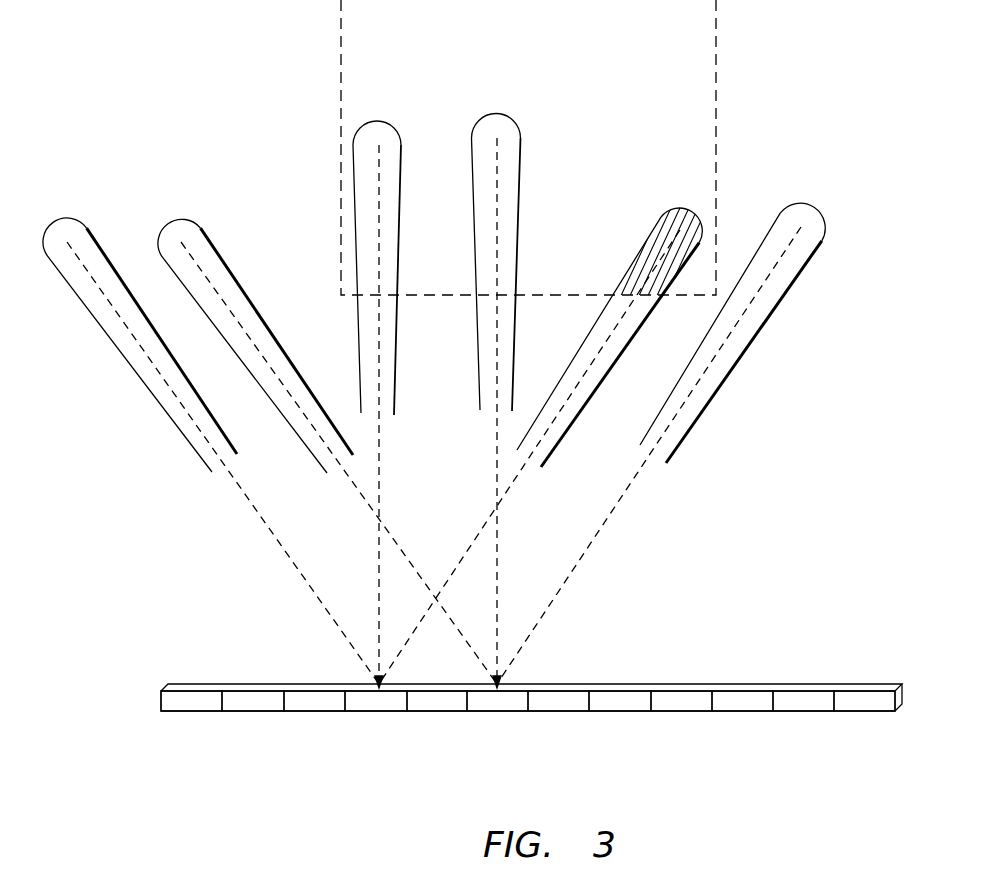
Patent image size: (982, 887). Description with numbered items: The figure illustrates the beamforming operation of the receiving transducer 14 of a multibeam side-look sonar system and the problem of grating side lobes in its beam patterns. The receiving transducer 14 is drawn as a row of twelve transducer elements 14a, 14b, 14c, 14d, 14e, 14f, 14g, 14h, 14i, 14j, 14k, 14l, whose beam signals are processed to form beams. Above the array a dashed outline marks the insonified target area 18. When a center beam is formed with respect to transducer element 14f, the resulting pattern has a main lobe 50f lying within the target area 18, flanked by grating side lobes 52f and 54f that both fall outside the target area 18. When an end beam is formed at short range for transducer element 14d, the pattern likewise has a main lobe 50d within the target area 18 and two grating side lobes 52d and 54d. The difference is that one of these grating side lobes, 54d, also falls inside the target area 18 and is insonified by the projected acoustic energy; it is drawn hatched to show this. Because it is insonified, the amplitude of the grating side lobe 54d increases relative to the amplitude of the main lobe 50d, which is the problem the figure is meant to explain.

The receiving transducer 14 is at (161, 701).
The transducer element 14a is at (187, 713).
The transducer element 14b is at (255, 713).
The transducer element 14c is at (315, 713).
The transducer element 14d is at (363, 713).
The transducer element 14e is at (442, 713).
The transducer element 14f is at (500, 713).
The transducer element 14g is at (558, 713).
The transducer element 14h is at (622, 713).
The transducer element 14i is at (685, 713).
The transducer element 14j is at (745, 713).
The transducer element 14k is at (802, 713).
The transducer element 14l is at (859, 718).
The insonified target area 18 is at (695, 56).
The main lobe 50d is at (382, 120).
The main lobe 50f is at (491, 113).
The grating side lobe 52d is at (63, 217).
The grating side lobe 52f is at (171, 218).
The grating side lobe 54d is at (682, 207).
The grating side lobe 54f is at (812, 204).